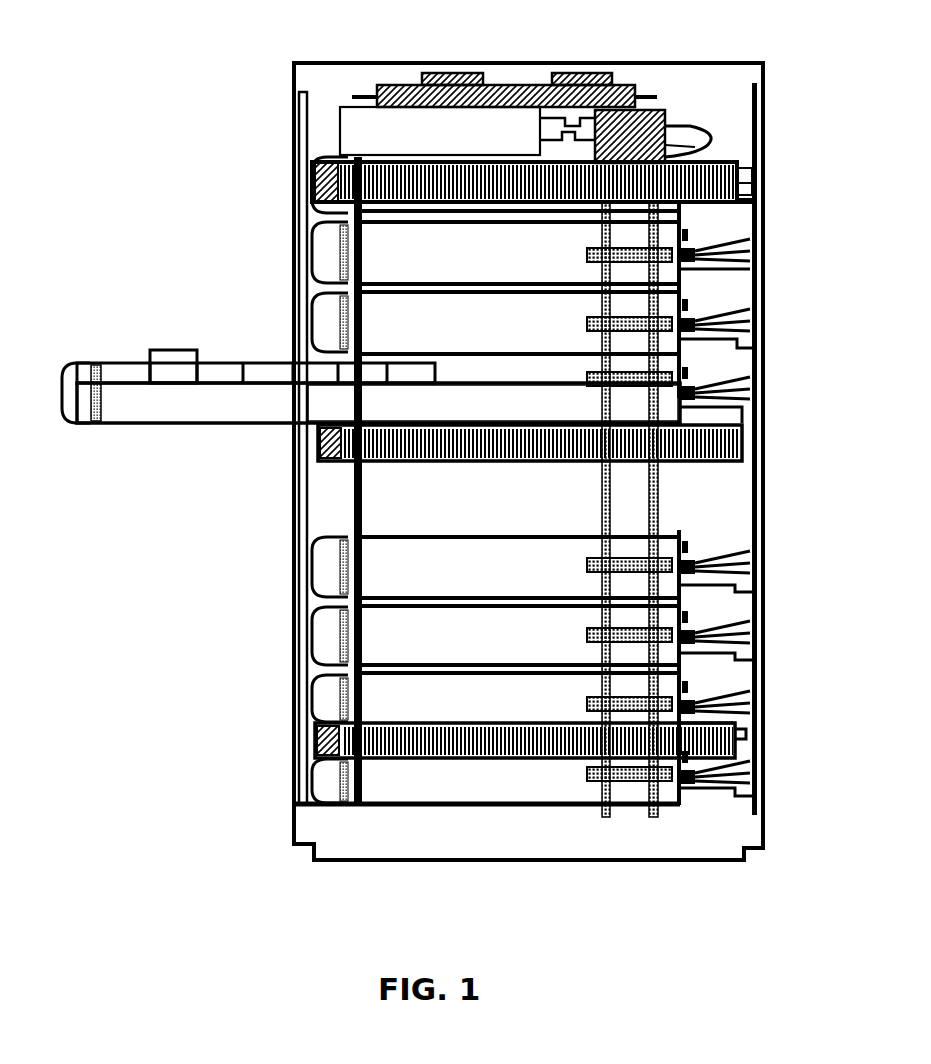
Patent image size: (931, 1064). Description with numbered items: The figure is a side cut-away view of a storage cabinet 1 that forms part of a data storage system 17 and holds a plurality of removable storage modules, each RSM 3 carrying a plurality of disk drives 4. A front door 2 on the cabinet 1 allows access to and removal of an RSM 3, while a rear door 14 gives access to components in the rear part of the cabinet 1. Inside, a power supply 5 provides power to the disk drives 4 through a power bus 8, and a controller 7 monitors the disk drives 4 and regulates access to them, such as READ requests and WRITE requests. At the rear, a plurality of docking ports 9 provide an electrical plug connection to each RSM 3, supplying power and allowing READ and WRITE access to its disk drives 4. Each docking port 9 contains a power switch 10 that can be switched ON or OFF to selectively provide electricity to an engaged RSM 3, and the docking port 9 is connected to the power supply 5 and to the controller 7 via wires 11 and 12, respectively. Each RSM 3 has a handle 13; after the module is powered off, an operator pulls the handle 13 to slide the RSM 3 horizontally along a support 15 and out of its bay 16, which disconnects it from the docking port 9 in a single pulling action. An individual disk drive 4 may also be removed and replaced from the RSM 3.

The storage cabinet 1 is at (448, 58).
The front door 2 is at (297, 143).
The RSM 3 is at (360, 384).
The disk drive 4 is at (165, 350).
The power supply 5 is at (292, 78).
The controller 7 is at (365, 496).
The power bus 8 is at (684, 333).
The docking port 9 is at (689, 371).
The power switch 10 is at (752, 223).
The wire 11 is at (752, 380).
The wire 12 is at (750, 417).
The handle 13 is at (67, 372).
The rear door 14 is at (765, 113).
The support 15 is at (465, 462).
The bay 16 is at (485, 384).
The data storage system 17 is at (265, 203).